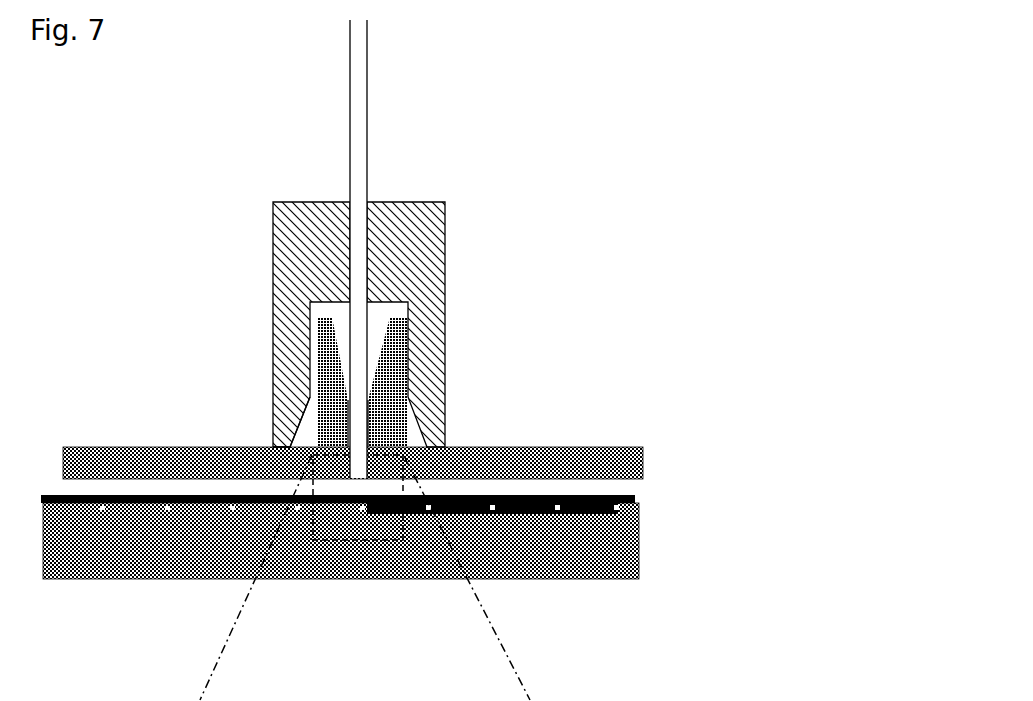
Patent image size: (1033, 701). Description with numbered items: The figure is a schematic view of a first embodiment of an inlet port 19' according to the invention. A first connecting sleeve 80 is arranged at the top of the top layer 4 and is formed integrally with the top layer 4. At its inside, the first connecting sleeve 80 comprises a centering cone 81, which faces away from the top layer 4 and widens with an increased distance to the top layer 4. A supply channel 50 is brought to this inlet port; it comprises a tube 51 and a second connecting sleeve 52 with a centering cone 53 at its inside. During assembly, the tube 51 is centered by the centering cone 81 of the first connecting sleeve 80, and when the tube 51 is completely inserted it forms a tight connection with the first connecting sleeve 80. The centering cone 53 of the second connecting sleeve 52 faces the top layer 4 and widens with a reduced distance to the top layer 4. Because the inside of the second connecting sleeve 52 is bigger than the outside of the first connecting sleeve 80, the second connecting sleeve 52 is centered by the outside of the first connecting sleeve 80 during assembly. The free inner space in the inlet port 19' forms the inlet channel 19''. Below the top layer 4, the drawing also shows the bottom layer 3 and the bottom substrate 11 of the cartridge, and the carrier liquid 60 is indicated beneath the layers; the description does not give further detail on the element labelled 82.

The supply channel 50 is at (299, 249).
The tube 51 is at (350, 105).
The second connecting sleeve 52 is at (288, 250).
The centering cone 53 is at (299, 430).
The inlet port 19' is at (487, 289).
The centering cone 81 is at (384, 350).
The first connecting sleeve 80 is at (392, 382).
The jaw tip 82 is at (370, 429).
The channel 19'' is at (424, 478).
The top layer 4 is at (597, 458).
The bottom layer 3 is at (633, 496).
The bottom substrate 11 is at (608, 548).
The carrier liquid 60 is at (365, 578).